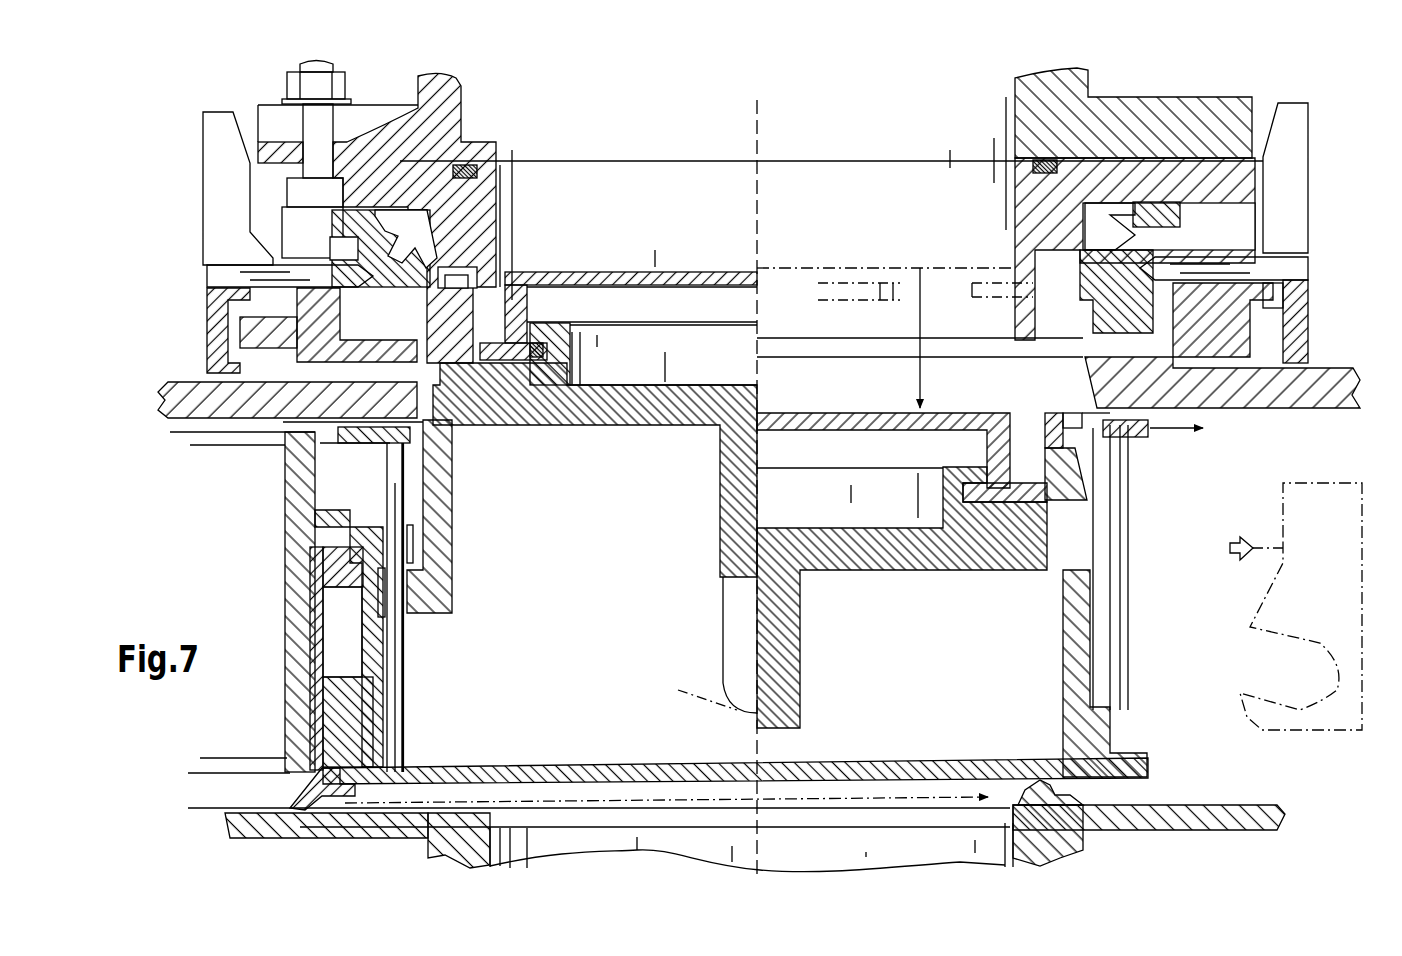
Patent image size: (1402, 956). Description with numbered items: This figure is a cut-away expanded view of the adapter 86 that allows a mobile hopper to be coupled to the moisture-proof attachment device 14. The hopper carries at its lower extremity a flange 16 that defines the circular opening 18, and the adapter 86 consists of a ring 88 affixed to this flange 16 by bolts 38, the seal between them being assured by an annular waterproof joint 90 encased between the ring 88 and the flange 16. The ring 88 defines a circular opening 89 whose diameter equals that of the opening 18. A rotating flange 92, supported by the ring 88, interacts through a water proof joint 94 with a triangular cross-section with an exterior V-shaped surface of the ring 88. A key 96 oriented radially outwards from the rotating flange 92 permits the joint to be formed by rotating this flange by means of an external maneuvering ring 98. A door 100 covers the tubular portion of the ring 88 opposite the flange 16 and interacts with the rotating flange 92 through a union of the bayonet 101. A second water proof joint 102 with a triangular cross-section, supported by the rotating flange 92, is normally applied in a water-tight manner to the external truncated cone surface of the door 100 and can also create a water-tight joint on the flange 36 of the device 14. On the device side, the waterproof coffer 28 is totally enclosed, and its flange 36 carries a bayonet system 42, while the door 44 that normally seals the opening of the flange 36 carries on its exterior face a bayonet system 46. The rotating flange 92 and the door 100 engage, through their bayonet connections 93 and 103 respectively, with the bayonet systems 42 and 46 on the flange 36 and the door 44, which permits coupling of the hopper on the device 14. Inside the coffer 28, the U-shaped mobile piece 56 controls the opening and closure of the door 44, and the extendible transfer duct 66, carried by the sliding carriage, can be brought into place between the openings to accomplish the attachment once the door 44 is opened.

The moisture-proof attachment device 14 is at (1333, 367).
The flange 16 is at (1140, 103).
The opening 18 is at (497, 120).
The waterproof coffer 28 is at (393, 835).
The flange 36 is at (293, 362).
The bolts 38 is at (287, 84).
The bayonet system 42 is at (340, 327).
The door 44 is at (673, 405).
The bayonet system 46 is at (537, 325).
The mobile piece 56 is at (1323, 480).
The extendible transfer duct 66 is at (342, 707).
The adapter 86 is at (1310, 217).
The ring 88 is at (1030, 190).
The circular opening 89 is at (493, 205).
The annular waterproof joint 90 is at (478, 170).
The rotating flange 92 is at (1120, 263).
The bayonet connection 93 is at (1173, 340).
The water proof joint 94 is at (1093, 217).
The key 96 is at (230, 257).
The external maneuvering ring 98 is at (218, 165).
The door 100 is at (727, 268).
The bayonet union 101 is at (523, 268).
The second water proof joint 102 is at (407, 353).
The bayonet connection 103 is at (543, 349).